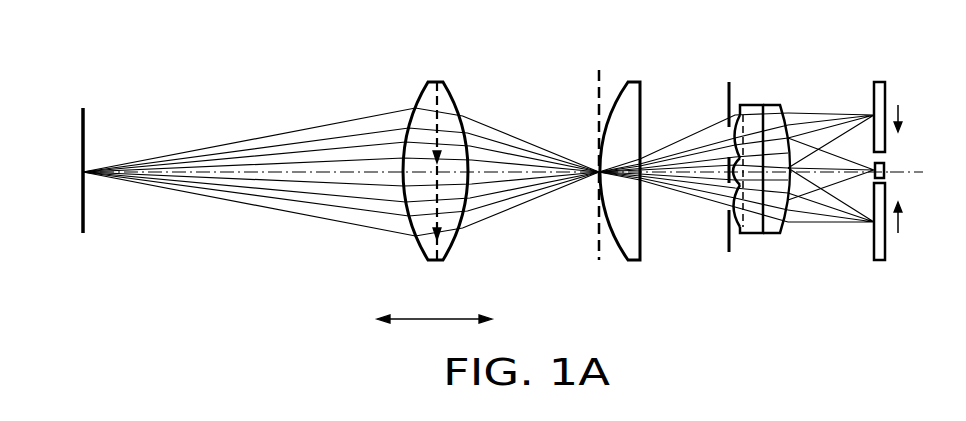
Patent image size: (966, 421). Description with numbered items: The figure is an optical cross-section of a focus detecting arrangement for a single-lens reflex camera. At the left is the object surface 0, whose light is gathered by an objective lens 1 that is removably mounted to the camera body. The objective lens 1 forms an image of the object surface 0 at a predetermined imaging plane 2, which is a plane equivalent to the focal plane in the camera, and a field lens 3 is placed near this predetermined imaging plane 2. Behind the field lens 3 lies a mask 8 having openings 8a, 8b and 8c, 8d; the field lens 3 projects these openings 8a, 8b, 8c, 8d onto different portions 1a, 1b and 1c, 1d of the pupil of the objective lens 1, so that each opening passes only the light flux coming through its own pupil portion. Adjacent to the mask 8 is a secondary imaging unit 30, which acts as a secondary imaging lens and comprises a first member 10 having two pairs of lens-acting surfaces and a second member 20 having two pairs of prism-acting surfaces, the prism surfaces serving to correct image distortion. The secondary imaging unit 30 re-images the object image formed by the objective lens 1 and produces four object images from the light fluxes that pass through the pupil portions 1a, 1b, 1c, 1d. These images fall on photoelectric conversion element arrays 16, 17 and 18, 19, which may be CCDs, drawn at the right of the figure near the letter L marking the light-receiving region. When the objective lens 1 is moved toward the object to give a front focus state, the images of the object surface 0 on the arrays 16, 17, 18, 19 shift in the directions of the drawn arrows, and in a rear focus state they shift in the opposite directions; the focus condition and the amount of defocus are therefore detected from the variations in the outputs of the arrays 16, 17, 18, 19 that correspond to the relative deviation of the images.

The object surface 0 is at (86, 113).
The objective lens 1 is at (405, 172).
The pupil portion 1a is at (427, 230).
The pupil portion 1b is at (435, 128).
The pupil portion 1c is at (377, 207).
The pupil portion 1d is at (433, 163).
The predetermined imaging plane 2 is at (598, 80).
The field lens 3 is at (635, 82).
The mask 8 is at (727, 93).
The mask opening 8a is at (733, 147).
The mask opening 8b is at (727, 208).
The mask opening 8c is at (692, 205).
The mask opening 8d is at (722, 184).
The first member 10 is at (747, 235).
The second member 20 is at (775, 235).
The secondary imaging unit 30 is at (769, 175).
The photoelectric conversion element array 16 is at (874, 93).
The photoelectric conversion element array 17 is at (877, 248).
The photoelectric conversion element array 18 is at (843, 215).
The photoelectric conversion element array 19 is at (875, 171).
The light receiving position / axis length L is at (932, 172).